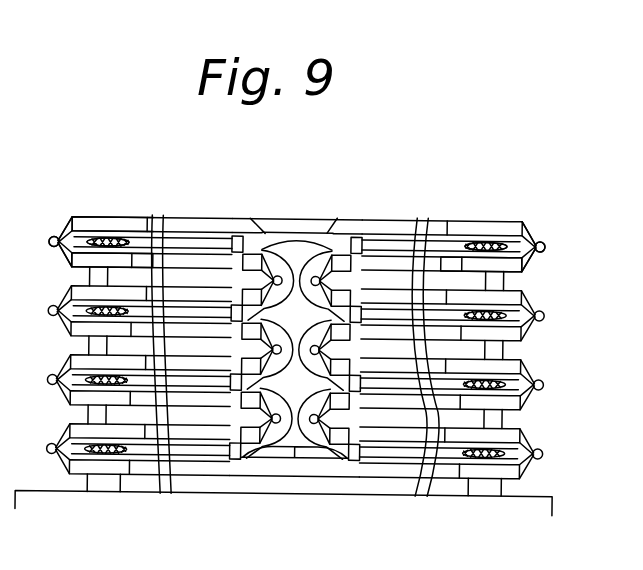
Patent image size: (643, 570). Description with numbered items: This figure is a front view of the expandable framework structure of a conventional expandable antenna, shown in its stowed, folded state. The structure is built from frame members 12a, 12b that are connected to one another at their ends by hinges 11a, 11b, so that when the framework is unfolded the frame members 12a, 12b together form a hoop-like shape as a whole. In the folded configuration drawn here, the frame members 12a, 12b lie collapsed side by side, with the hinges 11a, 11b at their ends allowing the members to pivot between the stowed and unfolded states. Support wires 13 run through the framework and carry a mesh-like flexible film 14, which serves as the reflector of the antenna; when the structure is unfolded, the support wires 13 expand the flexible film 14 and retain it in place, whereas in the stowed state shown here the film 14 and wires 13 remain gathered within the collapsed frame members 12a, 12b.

The hinge 11a is at (252, 223).
The hinge 11b is at (63, 221).
The frame member 12a is at (198, 225).
The frame member 12b is at (128, 262).
The support wire 13 is at (85, 218).
The mesh-like flexible film 14 is at (476, 237).